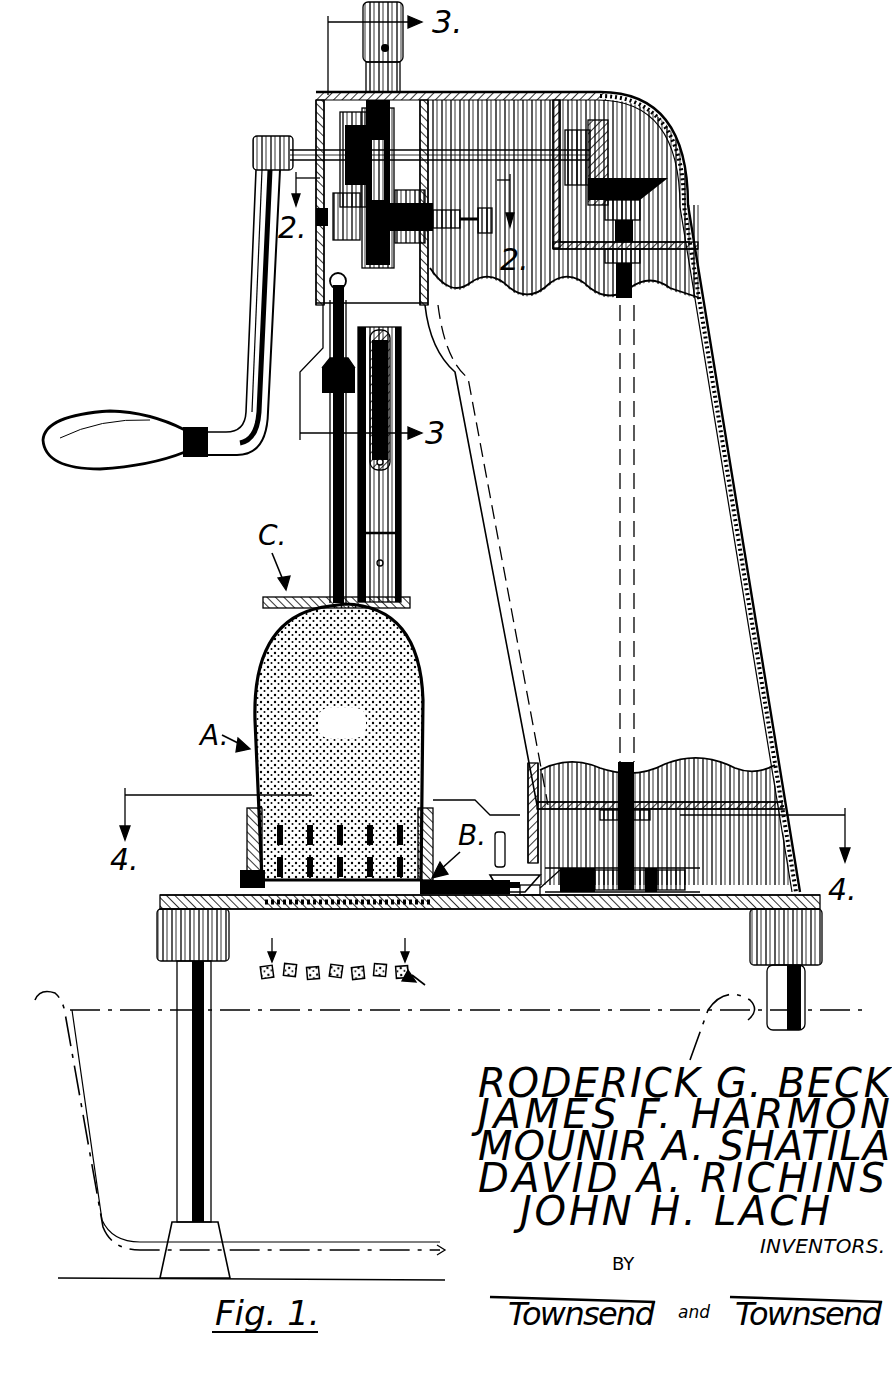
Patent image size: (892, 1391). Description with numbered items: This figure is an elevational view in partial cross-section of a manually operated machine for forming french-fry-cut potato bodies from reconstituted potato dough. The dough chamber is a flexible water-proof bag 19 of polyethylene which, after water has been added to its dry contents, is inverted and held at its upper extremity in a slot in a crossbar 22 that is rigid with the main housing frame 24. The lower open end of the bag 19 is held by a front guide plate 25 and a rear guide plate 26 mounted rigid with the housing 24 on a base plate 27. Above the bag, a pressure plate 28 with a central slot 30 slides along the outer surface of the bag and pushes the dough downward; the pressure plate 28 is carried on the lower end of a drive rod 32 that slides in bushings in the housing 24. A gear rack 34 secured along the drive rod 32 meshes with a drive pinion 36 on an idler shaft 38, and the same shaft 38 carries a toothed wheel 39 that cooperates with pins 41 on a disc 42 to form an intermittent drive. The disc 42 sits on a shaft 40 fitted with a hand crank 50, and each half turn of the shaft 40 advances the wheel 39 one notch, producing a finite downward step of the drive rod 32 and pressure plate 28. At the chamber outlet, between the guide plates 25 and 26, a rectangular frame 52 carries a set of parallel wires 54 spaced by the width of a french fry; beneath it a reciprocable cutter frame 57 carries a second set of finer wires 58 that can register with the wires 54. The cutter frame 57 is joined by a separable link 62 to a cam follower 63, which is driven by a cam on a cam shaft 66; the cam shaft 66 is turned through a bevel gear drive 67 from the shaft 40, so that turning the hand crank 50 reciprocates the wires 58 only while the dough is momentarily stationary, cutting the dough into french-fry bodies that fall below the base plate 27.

The flexible water-proof bag 19 is at (260, 658).
The crossbar 22 is at (330, 390).
The main housing frame 24 is at (705, 418).
The front guide plate 25 is at (250, 818).
The rear guide plate 26 is at (428, 846).
The base plate 27 is at (668, 908).
The pressure plate 28 is at (268, 602).
The slot 30 is at (338, 600).
The drive rod 32 is at (390, 493).
The gear rack 34 is at (385, 376).
The drive pinion 36 is at (378, 197).
The idler shaft 38 is at (437, 228).
The toothed wheel 39 is at (330, 245).
The shaft 40 is at (450, 150).
The pins 41 is at (330, 125).
The disc 42 is at (358, 92).
The hand crank 50 is at (262, 275).
The rectangular frame 52 is at (248, 875).
The parallelly-spaced wires 54 is at (342, 862).
The reciprocable cutter frame 57 is at (445, 887).
The second set of parallelly-spaced wires 58 is at (395, 900).
The separable link 62 is at (516, 897).
The cam follower 63 is at (672, 875).
The cam shaft 66 is at (630, 778).
The bevel gear drive 67 is at (610, 178).